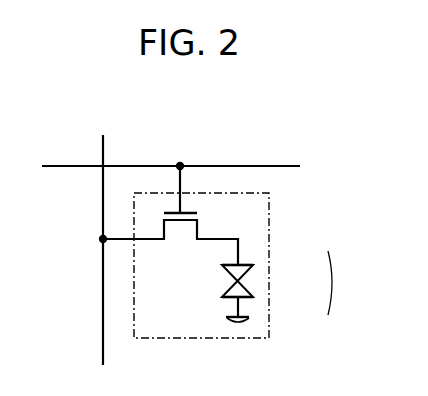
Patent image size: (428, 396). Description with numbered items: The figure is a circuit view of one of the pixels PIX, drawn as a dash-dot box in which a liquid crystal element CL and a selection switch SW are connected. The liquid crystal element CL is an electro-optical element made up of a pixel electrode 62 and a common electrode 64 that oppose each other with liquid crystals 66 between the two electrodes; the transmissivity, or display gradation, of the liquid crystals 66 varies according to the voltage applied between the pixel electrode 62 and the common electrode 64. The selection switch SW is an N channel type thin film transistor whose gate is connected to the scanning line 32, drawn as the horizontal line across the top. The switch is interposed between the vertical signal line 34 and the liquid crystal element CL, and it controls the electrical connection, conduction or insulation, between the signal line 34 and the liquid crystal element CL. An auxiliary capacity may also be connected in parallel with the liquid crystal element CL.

The scanning line 32 is at (64, 167).
The signal line 34 is at (102, 294).
The pixel PIX is at (270, 218).
The selection switch SW is at (182, 222).
The pixel electrode 62 is at (254, 265).
The liquid crystals 66 is at (242, 280).
The common electrode 64 is at (254, 298).
The liquid crystal element CL is at (346, 283).